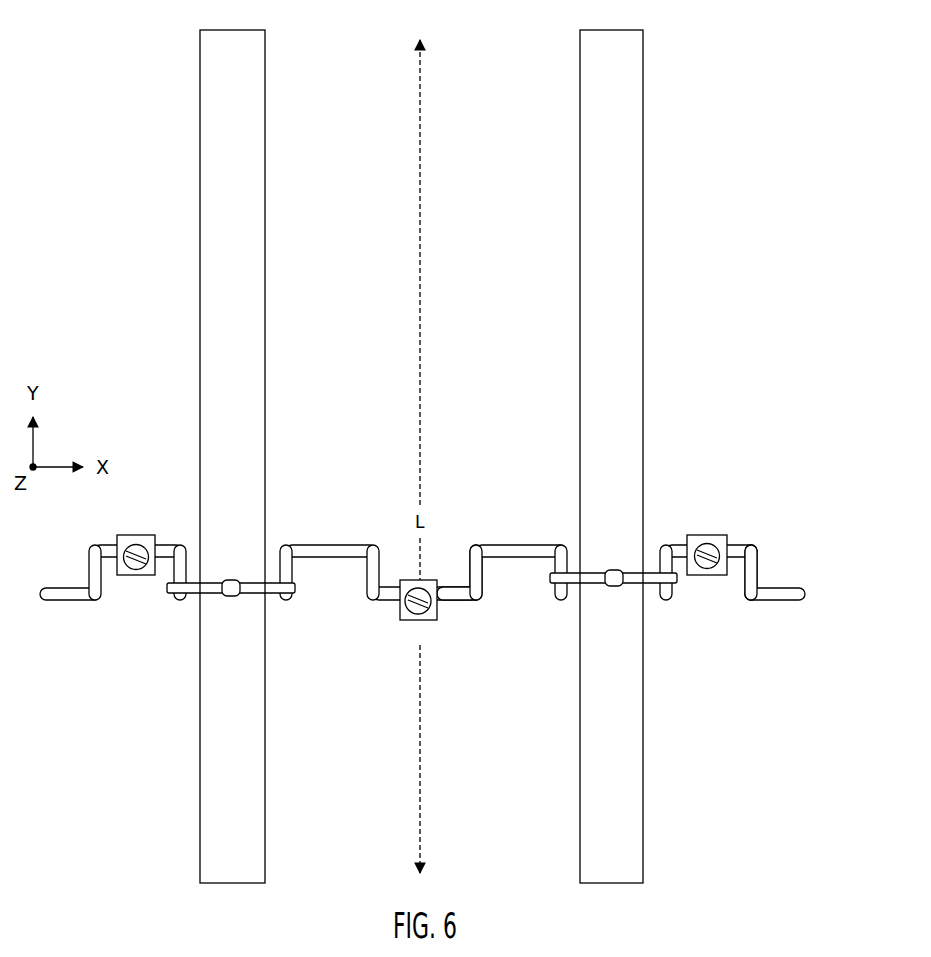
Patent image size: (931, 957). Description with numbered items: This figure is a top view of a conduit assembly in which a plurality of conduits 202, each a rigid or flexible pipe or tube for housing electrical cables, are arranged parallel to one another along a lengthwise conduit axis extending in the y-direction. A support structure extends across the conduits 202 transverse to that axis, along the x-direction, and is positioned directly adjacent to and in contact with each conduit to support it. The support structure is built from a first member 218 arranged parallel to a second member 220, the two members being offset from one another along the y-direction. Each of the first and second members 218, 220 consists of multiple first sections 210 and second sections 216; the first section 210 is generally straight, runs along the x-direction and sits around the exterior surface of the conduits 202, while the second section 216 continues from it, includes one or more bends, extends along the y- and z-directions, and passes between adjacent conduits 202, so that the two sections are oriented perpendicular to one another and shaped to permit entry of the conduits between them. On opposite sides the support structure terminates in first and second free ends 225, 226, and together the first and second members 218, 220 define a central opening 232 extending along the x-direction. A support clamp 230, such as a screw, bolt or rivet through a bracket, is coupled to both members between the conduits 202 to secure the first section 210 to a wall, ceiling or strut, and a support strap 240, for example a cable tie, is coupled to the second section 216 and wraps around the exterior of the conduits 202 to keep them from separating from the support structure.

The conduits 202 is at (252, 120).
The first section 210 is at (380, 604).
The second section 216 is at (380, 562).
The first member 218 is at (465, 627).
The second member 220 is at (508, 524).
The first free end 225 is at (50, 588).
The second free end 226 is at (798, 592).
The support clamp 230 is at (134, 521).
The central opening 232 is at (770, 564).
The support strap 240 is at (637, 573).